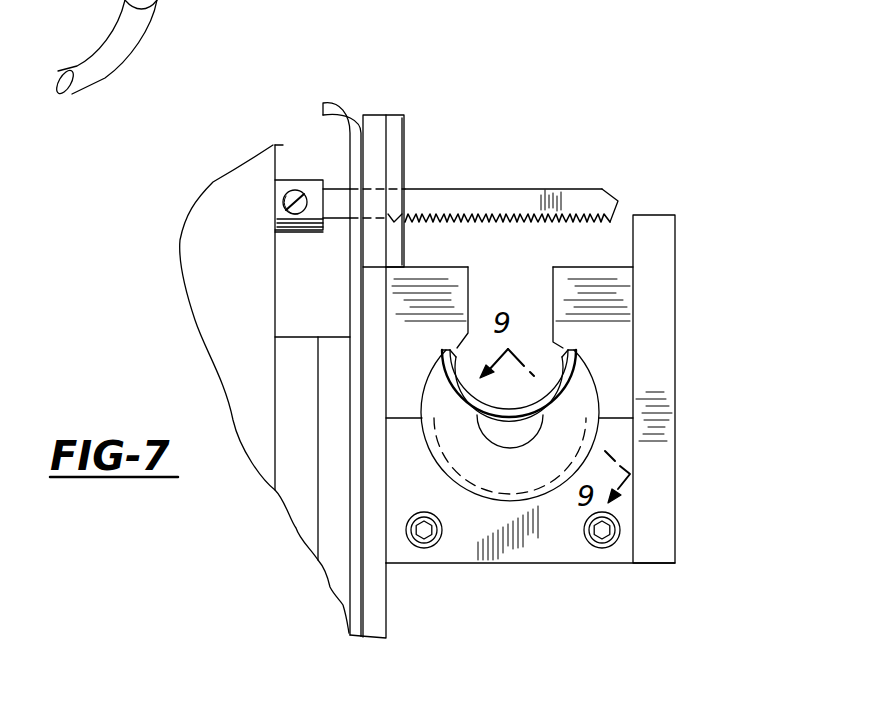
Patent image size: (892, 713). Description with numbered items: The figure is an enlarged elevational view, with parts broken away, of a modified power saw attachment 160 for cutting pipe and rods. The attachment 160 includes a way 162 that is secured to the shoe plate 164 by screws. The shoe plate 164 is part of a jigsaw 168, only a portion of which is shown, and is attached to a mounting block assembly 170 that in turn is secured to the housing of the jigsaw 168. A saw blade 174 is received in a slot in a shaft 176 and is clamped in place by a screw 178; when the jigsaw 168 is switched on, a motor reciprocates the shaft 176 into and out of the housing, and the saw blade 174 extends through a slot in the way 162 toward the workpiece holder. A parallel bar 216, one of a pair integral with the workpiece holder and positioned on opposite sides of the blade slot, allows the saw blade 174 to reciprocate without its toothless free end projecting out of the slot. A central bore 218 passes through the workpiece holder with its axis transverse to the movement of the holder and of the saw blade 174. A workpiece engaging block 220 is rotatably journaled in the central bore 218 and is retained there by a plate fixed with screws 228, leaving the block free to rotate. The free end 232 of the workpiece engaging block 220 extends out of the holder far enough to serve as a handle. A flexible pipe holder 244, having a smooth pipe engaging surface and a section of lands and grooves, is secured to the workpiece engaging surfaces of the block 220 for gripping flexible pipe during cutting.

The power saw attachment 160 is at (682, 193).
The way 162 is at (375, 115).
The shoe plate 164 is at (348, 110).
The jigsaw 168 is at (137, 48).
The mounting block assembly 170 is at (320, 320).
The saw blade 174 is at (555, 190).
The shaft 176 is at (297, 180).
The screw 178 is at (283, 200).
The parallel bar 216 is at (667, 280).
The central bore 218 is at (598, 403).
The workpiece engaging block 220 is at (593, 438).
The screws 228 is at (424, 548).
The free end of the workpiece engaging block 232 is at (565, 425).
The flexible pipe holder 244 is at (522, 417).